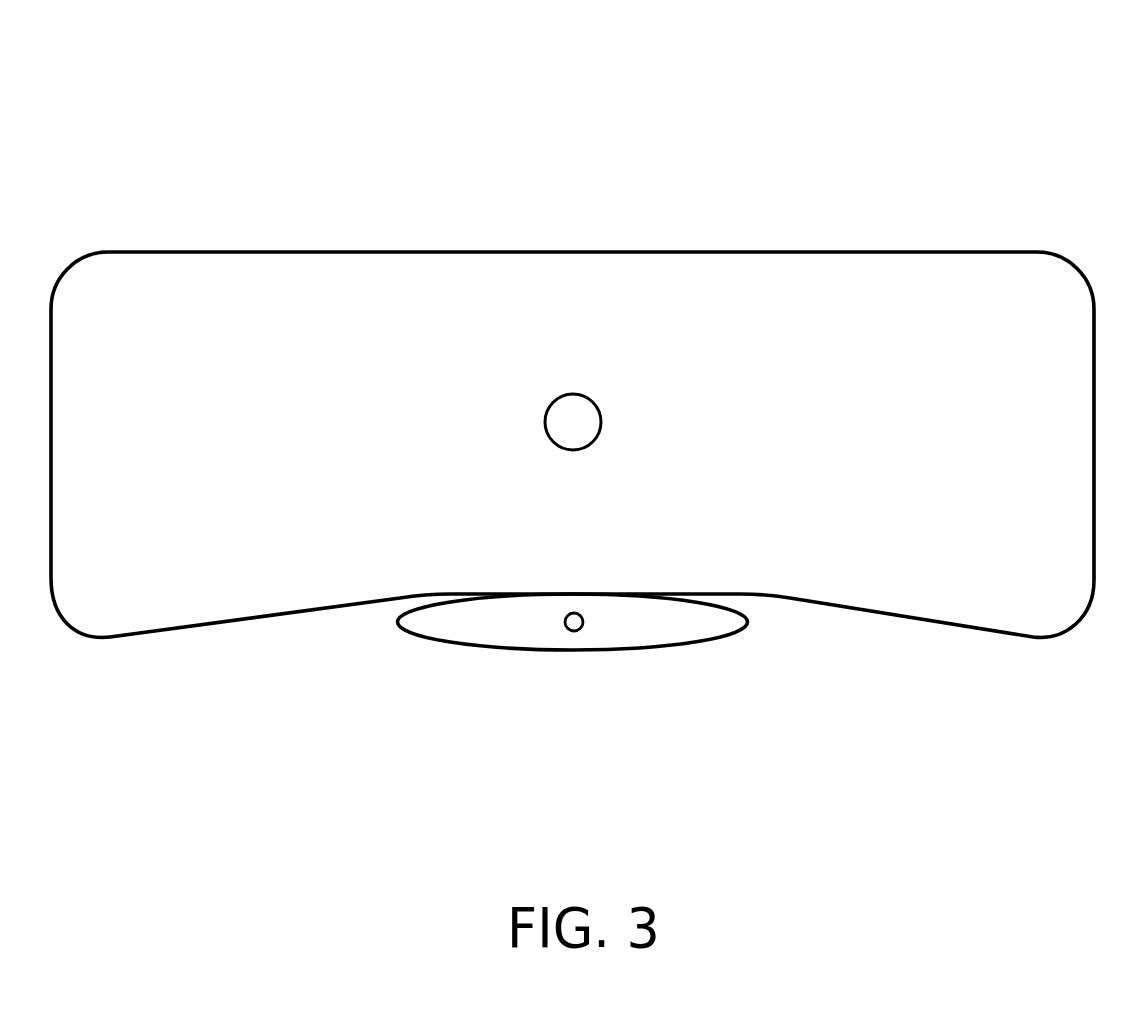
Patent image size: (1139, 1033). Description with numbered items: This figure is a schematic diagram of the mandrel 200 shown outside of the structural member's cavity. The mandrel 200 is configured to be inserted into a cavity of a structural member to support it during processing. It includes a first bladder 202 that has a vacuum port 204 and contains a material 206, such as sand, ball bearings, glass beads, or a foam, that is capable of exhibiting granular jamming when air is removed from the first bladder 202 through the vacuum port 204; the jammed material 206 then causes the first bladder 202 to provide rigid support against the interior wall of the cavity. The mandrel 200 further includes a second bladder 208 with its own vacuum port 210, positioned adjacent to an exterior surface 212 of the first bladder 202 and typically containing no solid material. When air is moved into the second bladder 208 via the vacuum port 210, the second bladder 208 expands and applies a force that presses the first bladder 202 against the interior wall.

The mandrel 200 is at (1028, 87).
The first bladder 202 is at (977, 250).
The vacuum port 204 is at (582, 394).
The material 206 is at (973, 438).
The second bladder 208 is at (728, 636).
The vacuum port 210 is at (577, 631).
The exterior surface 212 is at (358, 625).